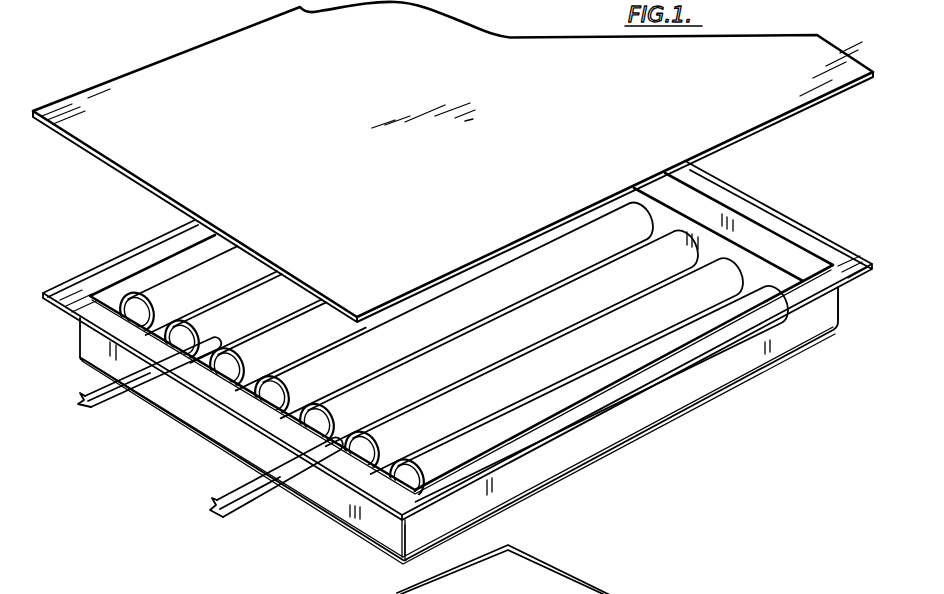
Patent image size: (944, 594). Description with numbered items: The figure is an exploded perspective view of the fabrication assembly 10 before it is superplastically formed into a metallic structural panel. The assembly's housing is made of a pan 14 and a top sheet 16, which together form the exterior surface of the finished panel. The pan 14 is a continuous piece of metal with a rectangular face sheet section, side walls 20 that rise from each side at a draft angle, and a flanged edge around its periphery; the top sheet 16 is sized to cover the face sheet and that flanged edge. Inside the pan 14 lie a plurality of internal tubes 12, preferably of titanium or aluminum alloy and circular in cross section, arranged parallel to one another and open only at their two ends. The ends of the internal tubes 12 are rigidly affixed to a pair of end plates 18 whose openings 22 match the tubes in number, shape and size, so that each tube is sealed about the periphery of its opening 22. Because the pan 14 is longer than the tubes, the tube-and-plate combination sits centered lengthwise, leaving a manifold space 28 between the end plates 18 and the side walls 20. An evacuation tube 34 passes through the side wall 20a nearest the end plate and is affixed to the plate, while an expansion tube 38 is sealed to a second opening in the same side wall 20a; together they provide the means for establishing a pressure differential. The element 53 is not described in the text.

The fabrication assembly 10 is at (707, 415).
The internal tubes 12 is at (277, 297).
The pan 14 is at (577, 443).
The top sheet 16 is at (505, 36).
The end plates 18 is at (262, 468).
The side walls 20 is at (660, 418).
The side wall 20a is at (378, 530).
The openings 22 is at (108, 372).
The manifold space 28 is at (106, 292).
The evacuation tube 34 is at (90, 406).
The expansion tube 38 is at (228, 507).
The lower plate 53 is at (553, 569).